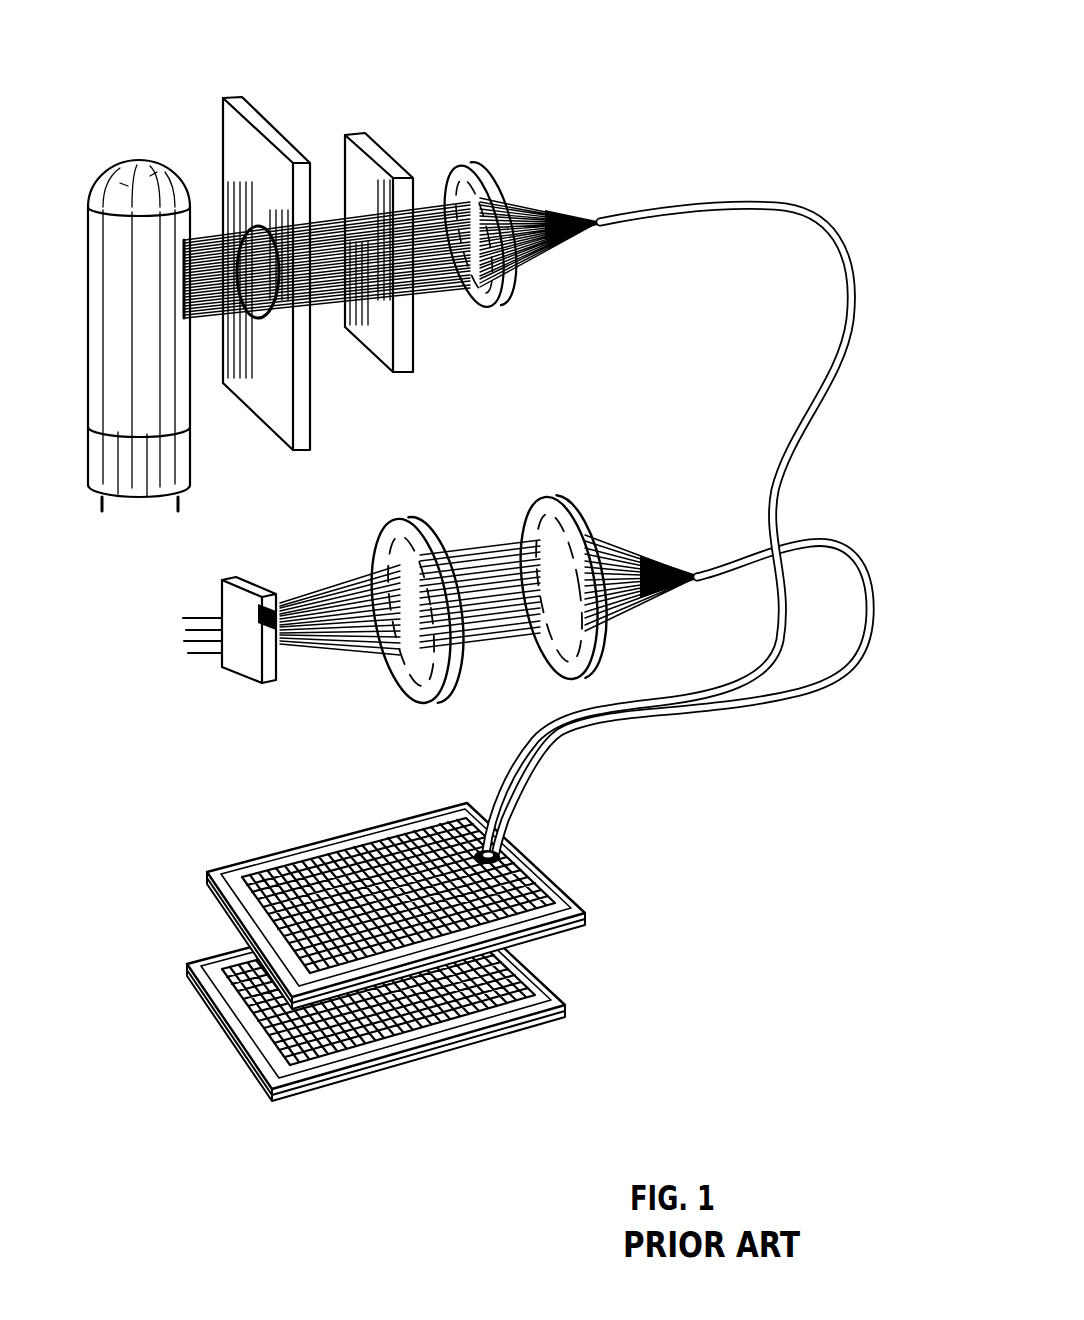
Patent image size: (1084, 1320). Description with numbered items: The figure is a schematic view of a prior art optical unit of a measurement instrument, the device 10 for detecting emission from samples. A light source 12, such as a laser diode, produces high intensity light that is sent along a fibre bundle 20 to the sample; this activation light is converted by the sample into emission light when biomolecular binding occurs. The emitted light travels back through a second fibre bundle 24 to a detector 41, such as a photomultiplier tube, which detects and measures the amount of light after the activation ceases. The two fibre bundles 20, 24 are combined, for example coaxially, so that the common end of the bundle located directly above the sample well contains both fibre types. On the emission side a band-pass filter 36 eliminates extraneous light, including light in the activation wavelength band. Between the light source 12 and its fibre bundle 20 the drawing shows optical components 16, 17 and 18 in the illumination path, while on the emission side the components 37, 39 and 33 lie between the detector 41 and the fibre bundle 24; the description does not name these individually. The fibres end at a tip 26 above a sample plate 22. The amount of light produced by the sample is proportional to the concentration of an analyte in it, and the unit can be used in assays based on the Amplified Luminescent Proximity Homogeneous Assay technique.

The device 10 is at (803, 888).
The light source 12 is at (243, 675).
The collimating lens 16 is at (410, 690).
The focusing lens 17 is at (580, 512).
The light beam 18 is at (340, 585).
The fibre bundle 20 is at (870, 647).
The sample plate / microtiter plate 22 is at (560, 873).
The fibre bundle 24 is at (712, 208).
The fiber tip / ferrule 26 is at (530, 840).
The focused light beam 33 is at (550, 205).
The band-pass filter 36 is at (396, 168).
The focusing lens 37 is at (487, 165).
The filter 39 is at (273, 135).
The detector 41 is at (148, 165).